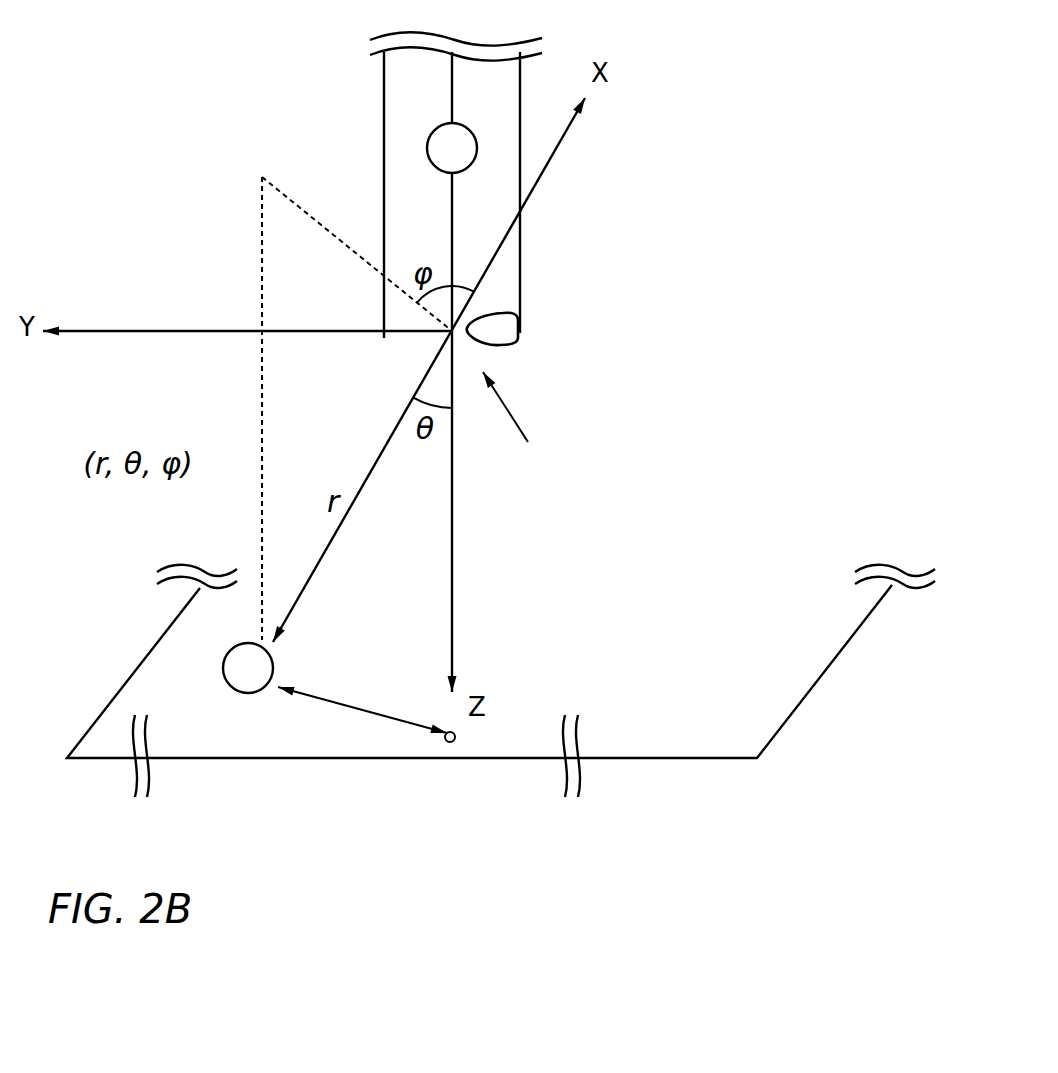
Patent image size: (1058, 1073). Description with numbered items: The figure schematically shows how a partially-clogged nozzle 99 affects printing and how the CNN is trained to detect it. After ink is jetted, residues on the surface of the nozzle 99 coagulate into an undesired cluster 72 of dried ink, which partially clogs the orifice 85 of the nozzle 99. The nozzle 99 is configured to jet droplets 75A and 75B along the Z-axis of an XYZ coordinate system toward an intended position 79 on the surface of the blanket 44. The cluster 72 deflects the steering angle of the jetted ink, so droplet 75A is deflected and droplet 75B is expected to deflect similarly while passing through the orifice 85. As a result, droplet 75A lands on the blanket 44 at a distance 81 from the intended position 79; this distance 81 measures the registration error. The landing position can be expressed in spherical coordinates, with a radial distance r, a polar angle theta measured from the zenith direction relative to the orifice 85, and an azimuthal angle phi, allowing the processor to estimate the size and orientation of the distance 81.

The nozzle 99 is at (384, 90).
The droplet 75B is at (427, 148).
The cluster 72 is at (503, 330).
The orifice 85 is at (513, 422).
The blanket 44 is at (680, 758).
The droplet 75A is at (248, 693).
The distance 81 is at (370, 716).
The intended position 79 is at (450, 742).